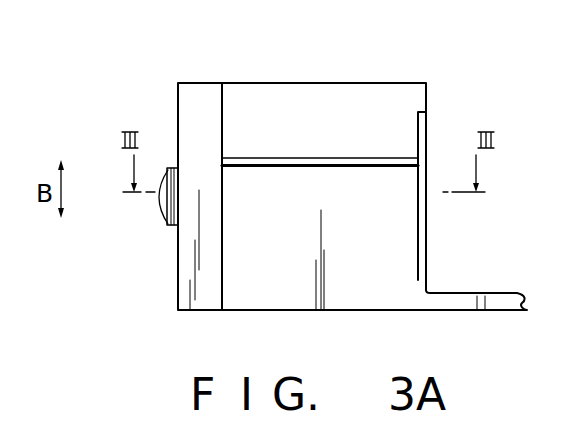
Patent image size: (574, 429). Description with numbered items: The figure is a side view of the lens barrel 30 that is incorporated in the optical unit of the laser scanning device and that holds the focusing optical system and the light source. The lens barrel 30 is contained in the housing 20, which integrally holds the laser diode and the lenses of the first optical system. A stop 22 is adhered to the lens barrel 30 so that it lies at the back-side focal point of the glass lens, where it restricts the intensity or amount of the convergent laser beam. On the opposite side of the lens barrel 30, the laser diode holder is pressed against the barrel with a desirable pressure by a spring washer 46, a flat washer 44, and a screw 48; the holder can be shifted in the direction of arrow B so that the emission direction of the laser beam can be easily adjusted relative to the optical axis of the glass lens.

The housing 20 is at (462, 293).
The stop 22 is at (428, 120).
The lens barrel 30 is at (426, 83).
The flat washer 44 is at (176, 227).
The spring washer 46 is at (172, 168).
The screw 48 is at (160, 207).